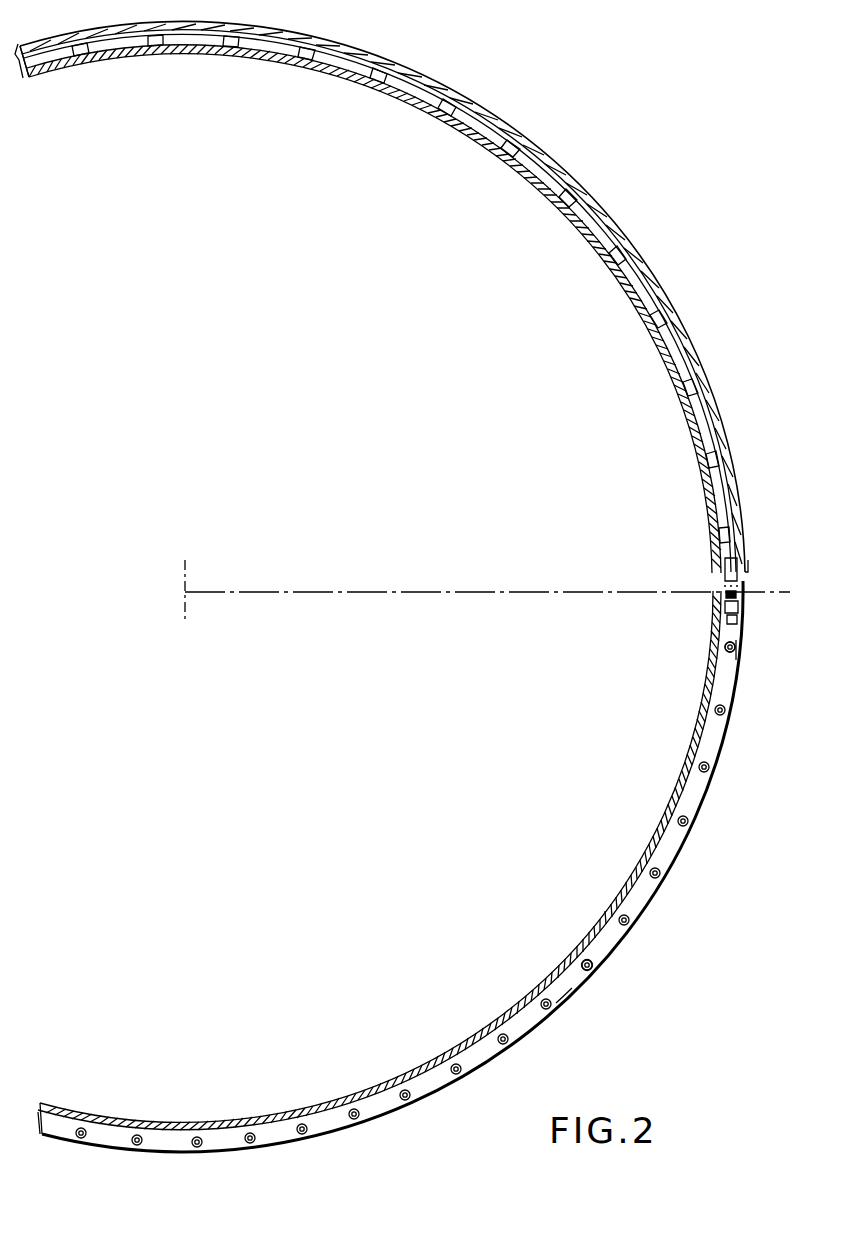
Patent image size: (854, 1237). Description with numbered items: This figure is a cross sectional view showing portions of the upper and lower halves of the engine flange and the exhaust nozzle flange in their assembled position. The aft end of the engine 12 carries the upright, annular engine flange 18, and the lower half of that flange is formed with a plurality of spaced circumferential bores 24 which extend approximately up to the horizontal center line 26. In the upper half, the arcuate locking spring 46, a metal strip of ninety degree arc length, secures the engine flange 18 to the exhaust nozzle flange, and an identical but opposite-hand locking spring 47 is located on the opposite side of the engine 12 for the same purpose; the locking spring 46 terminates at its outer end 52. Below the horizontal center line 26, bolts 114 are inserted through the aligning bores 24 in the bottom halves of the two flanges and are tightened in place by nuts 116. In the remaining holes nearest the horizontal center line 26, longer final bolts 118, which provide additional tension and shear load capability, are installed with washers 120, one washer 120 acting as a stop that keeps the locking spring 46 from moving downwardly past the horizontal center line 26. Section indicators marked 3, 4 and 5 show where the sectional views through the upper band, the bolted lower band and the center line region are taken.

The engine 12 is at (700, 733).
The engine flange 18 is at (648, 901).
The circumferential bores 24 is at (462, 1072).
The horizontal center line 26 is at (462, 598).
The locking spring 46 is at (554, 184).
The locking spring 47 is at (92, 52).
The outer end 52 is at (734, 608).
The bolts 114 is at (566, 1003).
The nuts 116 is at (594, 966).
The final bolts 118 is at (727, 646).
The washers 120 is at (737, 652).
The section line 3- 3 is at (522, 210).
The section line 4- 4 is at (196, 1116).
The section line 5- 5 is at (761, 470).